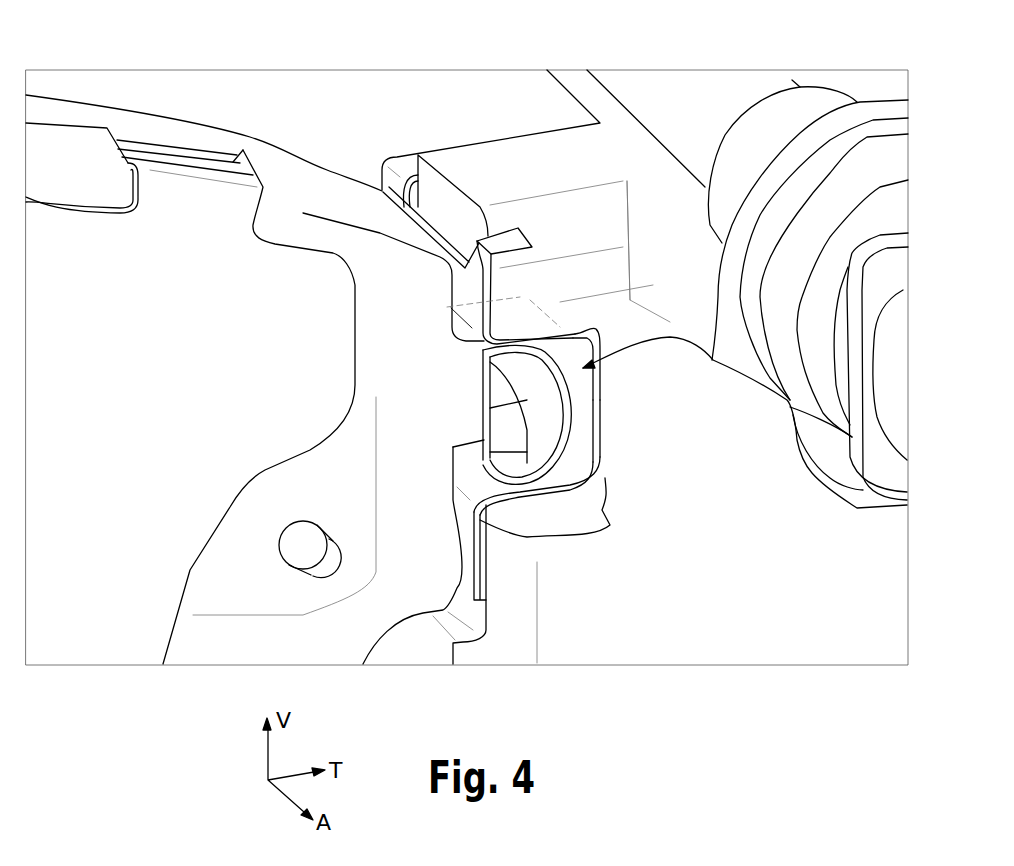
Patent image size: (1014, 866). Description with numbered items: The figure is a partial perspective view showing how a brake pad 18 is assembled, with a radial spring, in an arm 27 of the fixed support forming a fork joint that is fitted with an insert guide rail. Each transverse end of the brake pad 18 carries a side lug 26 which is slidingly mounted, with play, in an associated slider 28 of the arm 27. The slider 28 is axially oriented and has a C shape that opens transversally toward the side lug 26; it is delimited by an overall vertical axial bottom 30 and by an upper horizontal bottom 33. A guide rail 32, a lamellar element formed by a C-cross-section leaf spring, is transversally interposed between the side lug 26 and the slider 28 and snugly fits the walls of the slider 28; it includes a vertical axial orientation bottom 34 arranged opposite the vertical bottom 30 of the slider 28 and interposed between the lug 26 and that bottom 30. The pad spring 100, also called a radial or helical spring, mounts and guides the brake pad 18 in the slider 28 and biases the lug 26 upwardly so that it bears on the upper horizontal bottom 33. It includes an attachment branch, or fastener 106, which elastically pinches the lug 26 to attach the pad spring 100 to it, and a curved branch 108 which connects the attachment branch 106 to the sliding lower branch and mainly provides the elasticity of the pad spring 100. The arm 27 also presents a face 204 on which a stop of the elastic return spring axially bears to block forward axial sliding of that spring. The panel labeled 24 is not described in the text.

The brake pad 18 is at (107, 503).
The panel 24 is at (232, 118).
The arm 27 is at (572, 212).
The guide rail 32 is at (480, 287).
The upper horizontal bottom 33 is at (605, 323).
The vertical bottom 30 is at (603, 397).
The slider 28 is at (612, 480).
The curved branch 108 is at (503, 470).
The side lug 26 is at (477, 350).
The pad spring 100 is at (568, 451).
The attachment branch 106 is at (503, 408).
The vertical axial orientation bottom 34 is at (630, 310).
The face 204 is at (745, 304).